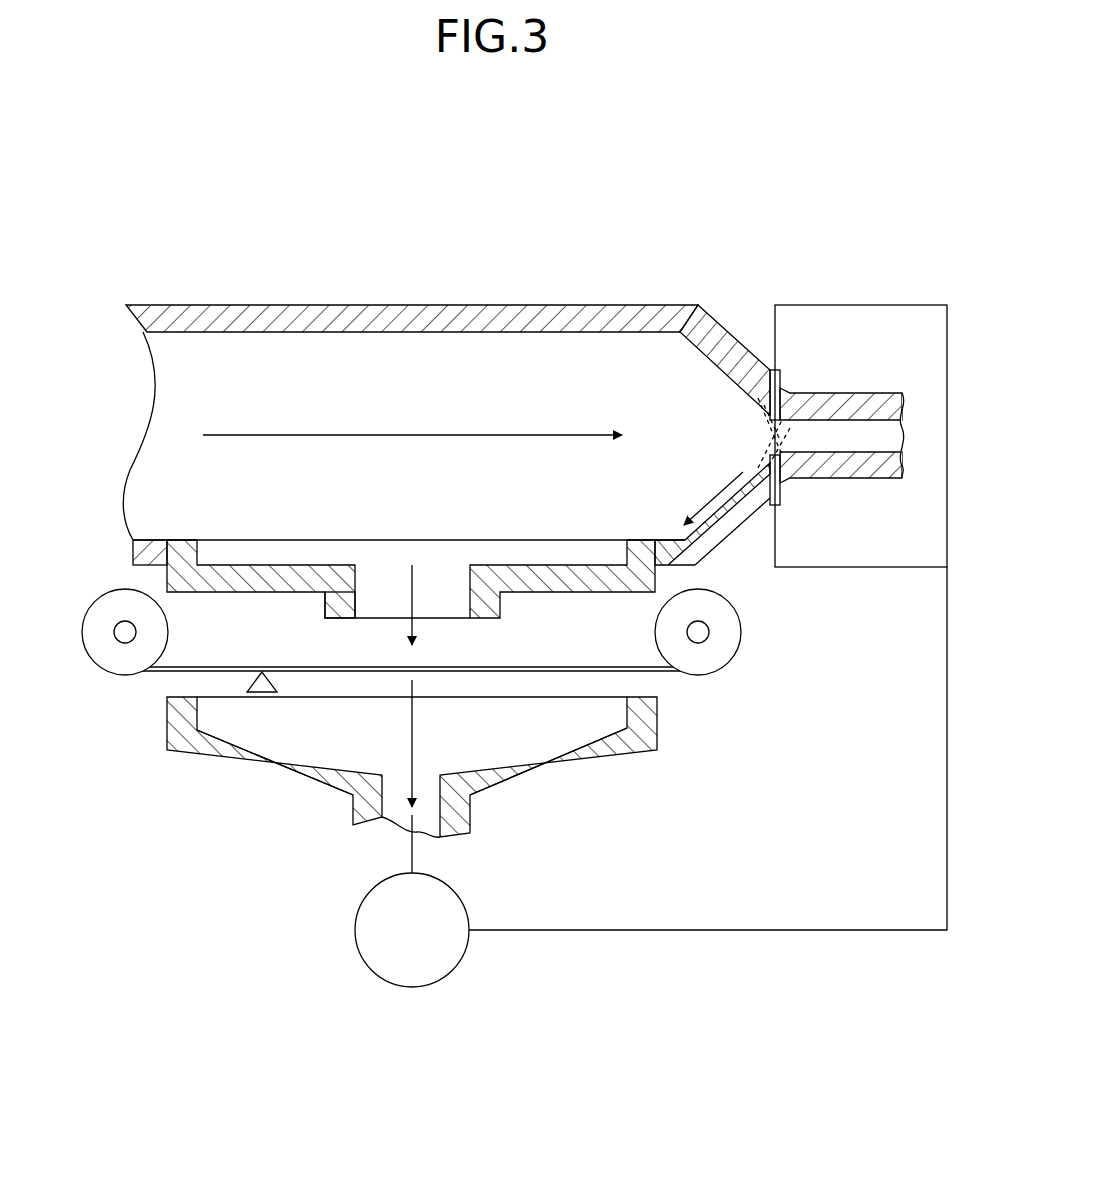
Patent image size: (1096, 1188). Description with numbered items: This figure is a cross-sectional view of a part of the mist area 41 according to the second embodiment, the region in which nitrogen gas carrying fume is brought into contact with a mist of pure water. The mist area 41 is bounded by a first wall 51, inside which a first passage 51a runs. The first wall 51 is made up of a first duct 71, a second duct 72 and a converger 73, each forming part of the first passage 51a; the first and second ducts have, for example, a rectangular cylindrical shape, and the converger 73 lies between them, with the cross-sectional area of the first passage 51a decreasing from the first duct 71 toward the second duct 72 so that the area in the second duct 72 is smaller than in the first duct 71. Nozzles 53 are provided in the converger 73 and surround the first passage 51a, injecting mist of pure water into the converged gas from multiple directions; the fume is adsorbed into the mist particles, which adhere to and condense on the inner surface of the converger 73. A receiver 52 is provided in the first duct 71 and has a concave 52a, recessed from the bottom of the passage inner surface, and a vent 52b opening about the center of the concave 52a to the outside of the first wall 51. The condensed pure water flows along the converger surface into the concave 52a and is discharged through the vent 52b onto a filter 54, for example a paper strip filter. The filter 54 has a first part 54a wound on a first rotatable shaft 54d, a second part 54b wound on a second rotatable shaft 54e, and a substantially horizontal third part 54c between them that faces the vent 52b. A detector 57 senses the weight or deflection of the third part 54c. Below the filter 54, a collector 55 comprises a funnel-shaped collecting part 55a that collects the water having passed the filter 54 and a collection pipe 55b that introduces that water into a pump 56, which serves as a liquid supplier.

The mist area 41 is at (192, 125).
The first wall 51 is at (302, 304).
The first passage 51a is at (262, 350).
The first duct 71 is at (466, 318).
The converger 73 is at (722, 345).
The nozzle 53 is at (782, 372).
The second duct 72 is at (860, 393).
The receiver 52 is at (185, 552).
The concave 52a is at (253, 565).
The vent 52b is at (355, 610).
The filter 54 is at (745, 648).
The first part 54a is at (100, 657).
The second part 54b is at (722, 655).
The third part 54c is at (652, 674).
The first shaft 54d is at (113, 628).
The second shaft 54e is at (712, 629).
The collector 55 is at (229, 768).
The collecting part 55a is at (296, 770).
The collection pipe 55b is at (360, 810).
The pump 56 is at (357, 936).
The detector 57 is at (251, 690).